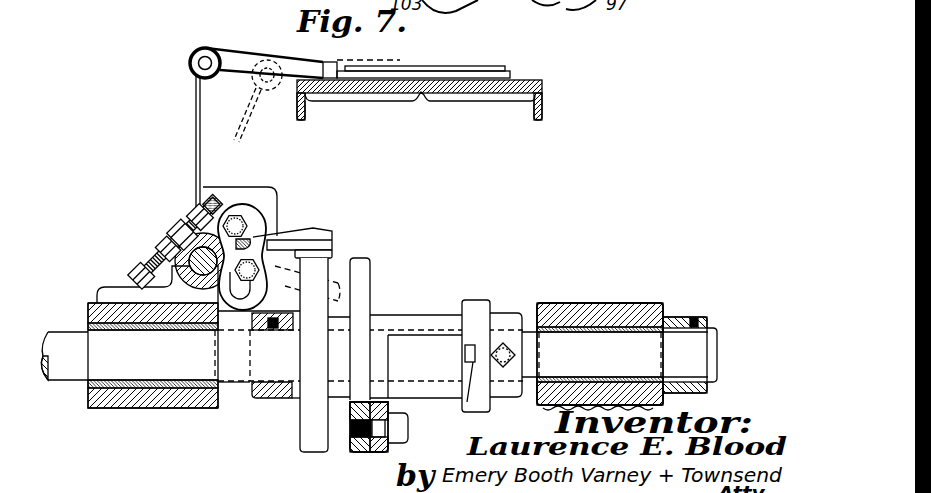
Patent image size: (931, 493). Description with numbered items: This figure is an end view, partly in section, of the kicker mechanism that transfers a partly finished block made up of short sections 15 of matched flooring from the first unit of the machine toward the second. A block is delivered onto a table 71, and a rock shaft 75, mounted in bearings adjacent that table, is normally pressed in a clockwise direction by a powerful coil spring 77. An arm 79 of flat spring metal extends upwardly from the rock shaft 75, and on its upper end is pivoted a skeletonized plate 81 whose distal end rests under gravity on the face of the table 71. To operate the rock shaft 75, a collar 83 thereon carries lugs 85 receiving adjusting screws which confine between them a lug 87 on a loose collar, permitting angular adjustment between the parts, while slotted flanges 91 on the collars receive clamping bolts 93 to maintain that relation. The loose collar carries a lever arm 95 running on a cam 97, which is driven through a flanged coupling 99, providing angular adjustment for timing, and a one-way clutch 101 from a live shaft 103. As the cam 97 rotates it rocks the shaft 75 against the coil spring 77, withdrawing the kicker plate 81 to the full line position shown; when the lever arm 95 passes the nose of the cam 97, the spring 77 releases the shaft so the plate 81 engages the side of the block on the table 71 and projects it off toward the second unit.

The short sections 15 is at (423, 72).
The table 71 is at (478, 80).
The rock shaft 75 is at (152, 272).
The coil spring 77 is at (186, 284).
The arm 79 is at (195, 133).
The skeletonized plate 81 is at (237, 58).
The collar 83 is at (259, 336).
The lugs 85 is at (195, 212).
The lug 87 is at (175, 232).
The slotted flanges 91 is at (260, 216).
The clamping bolts 93 is at (238, 220).
The lever arm 95 is at (316, 230).
The cam 97 is at (318, 271).
The flanged coupling 99 is at (375, 455).
The one-way clutch 101 is at (477, 305).
The live shaft 103 is at (587, 328).